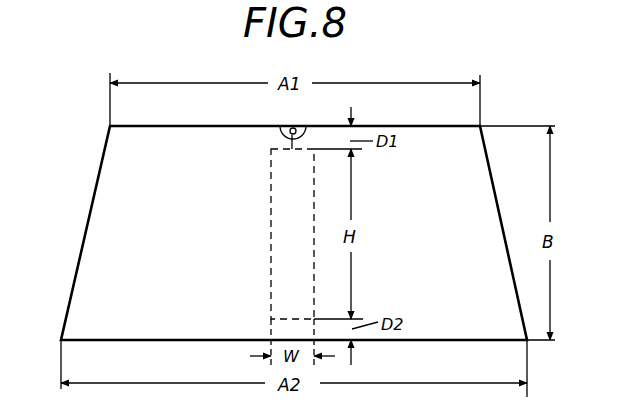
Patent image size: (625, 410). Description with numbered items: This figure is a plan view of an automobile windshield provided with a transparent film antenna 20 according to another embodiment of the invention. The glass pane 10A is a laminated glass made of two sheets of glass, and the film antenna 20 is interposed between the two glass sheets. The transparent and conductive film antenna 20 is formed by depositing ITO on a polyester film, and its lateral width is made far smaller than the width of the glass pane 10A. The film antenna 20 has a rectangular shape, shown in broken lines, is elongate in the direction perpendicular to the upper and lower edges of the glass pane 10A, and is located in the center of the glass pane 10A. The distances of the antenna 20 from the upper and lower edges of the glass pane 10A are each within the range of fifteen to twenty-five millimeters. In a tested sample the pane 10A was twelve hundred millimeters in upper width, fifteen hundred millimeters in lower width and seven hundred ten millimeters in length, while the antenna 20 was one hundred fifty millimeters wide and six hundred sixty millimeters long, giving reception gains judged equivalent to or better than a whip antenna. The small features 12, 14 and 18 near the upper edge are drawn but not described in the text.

The glass pane 10A is at (103, 158).
The recess 12 is at (288, 127).
The slot 14 is at (290, 143).
The hole 18 is at (282, 132).
The transparent film antenna 20 is at (293, 207).